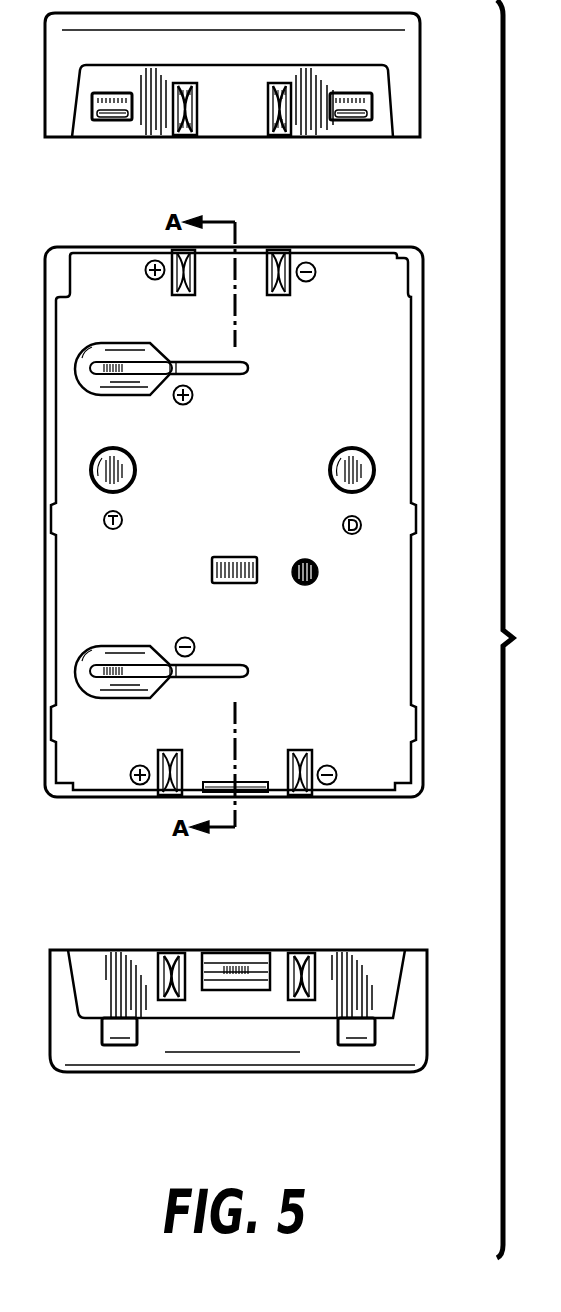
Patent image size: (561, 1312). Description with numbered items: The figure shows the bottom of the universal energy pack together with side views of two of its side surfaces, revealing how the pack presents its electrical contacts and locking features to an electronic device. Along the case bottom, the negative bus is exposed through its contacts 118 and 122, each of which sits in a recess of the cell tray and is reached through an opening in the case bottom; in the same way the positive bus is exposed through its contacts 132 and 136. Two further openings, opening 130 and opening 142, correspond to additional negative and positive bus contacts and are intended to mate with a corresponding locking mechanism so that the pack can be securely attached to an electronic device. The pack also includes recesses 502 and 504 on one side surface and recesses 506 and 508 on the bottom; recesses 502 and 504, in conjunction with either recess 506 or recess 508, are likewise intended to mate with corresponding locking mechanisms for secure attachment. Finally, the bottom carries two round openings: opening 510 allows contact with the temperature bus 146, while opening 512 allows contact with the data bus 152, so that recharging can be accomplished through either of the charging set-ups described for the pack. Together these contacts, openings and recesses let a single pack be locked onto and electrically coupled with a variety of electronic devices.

The contact 118 is at (282, 132).
The contact 122 is at (298, 795).
The opening 130 is at (128, 650).
The contact 132 is at (185, 130).
The contact 136 is at (170, 795).
The opening 142 is at (128, 348).
The temperature bus 146 is at (120, 1040).
The data bus 152 is at (358, 1040).
The recess 502 is at (117, 120).
The recess 504 is at (365, 120).
The recess 506 is at (258, 572).
The recess 508 is at (252, 795).
The opening 510 is at (124, 450).
The opening 512 is at (337, 450).